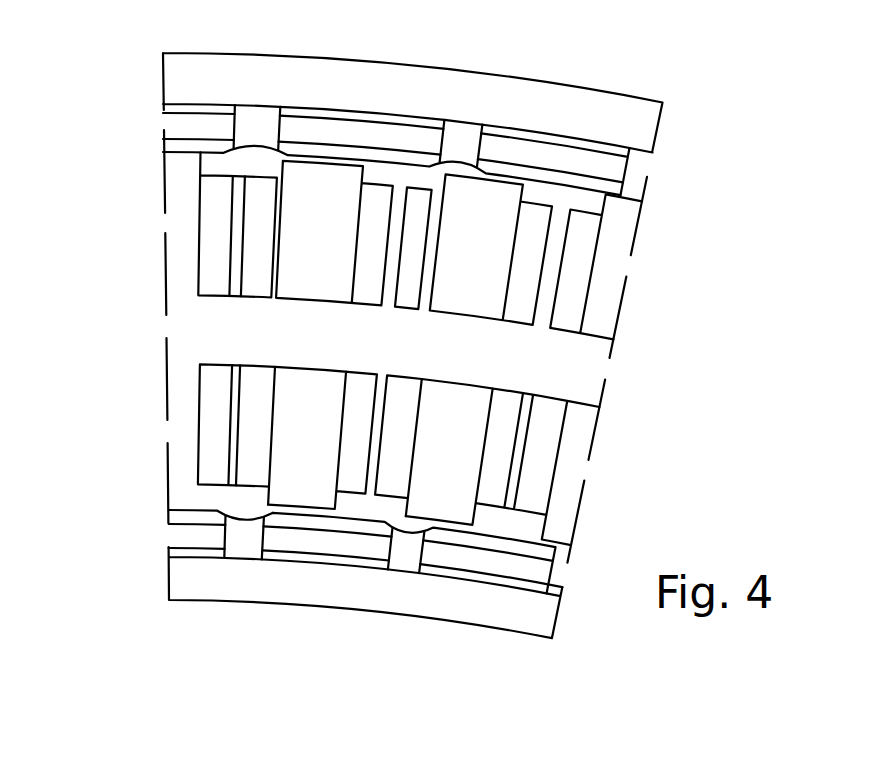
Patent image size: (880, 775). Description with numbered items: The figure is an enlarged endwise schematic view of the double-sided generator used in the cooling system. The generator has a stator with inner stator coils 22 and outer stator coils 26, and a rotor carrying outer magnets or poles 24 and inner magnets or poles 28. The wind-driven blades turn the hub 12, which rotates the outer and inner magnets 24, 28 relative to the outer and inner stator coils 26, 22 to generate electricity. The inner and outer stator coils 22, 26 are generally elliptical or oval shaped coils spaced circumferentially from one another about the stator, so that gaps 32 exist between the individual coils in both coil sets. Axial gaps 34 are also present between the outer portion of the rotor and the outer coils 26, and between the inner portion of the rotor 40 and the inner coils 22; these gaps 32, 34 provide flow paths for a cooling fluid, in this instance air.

The hub 12 is at (174, 53).
The inner stator coils 22 is at (210, 392).
The outer magnets or poles 24 is at (353, 132).
The outer stator coils 26 is at (222, 238).
The inner magnets or poles 28 is at (297, 542).
The gaps 32 is at (243, 190).
The axial gaps 34 is at (183, 145).
The inner portion of the rotor 40 is at (241, 580).